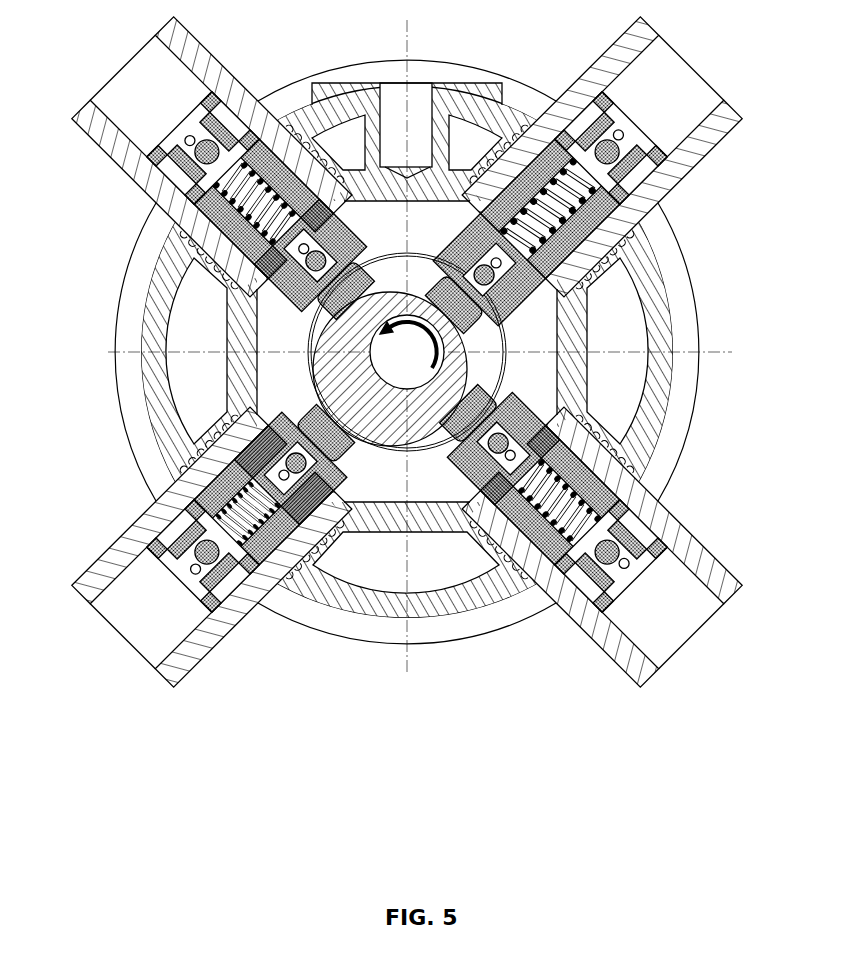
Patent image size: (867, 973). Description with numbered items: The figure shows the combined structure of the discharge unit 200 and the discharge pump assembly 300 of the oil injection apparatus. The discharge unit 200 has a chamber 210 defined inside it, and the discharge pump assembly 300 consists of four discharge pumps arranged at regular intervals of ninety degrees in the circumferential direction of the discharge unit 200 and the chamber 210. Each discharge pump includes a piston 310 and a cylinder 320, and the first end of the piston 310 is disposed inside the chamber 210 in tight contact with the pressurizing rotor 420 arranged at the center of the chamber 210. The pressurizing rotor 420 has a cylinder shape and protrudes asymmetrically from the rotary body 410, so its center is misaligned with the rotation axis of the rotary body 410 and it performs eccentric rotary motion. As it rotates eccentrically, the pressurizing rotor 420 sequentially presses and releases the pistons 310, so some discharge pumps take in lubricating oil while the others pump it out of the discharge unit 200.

The discharge unit 200 is at (690, 426).
The chamber 210 is at (160, 274).
The discharge pump assembly 300 is at (423, 370).
The piston 310 is at (525, 500).
The cylinder 320 is at (627, 652).
The rotary body 410 is at (340, 406).
The pressurizing rotor 420 is at (345, 339).